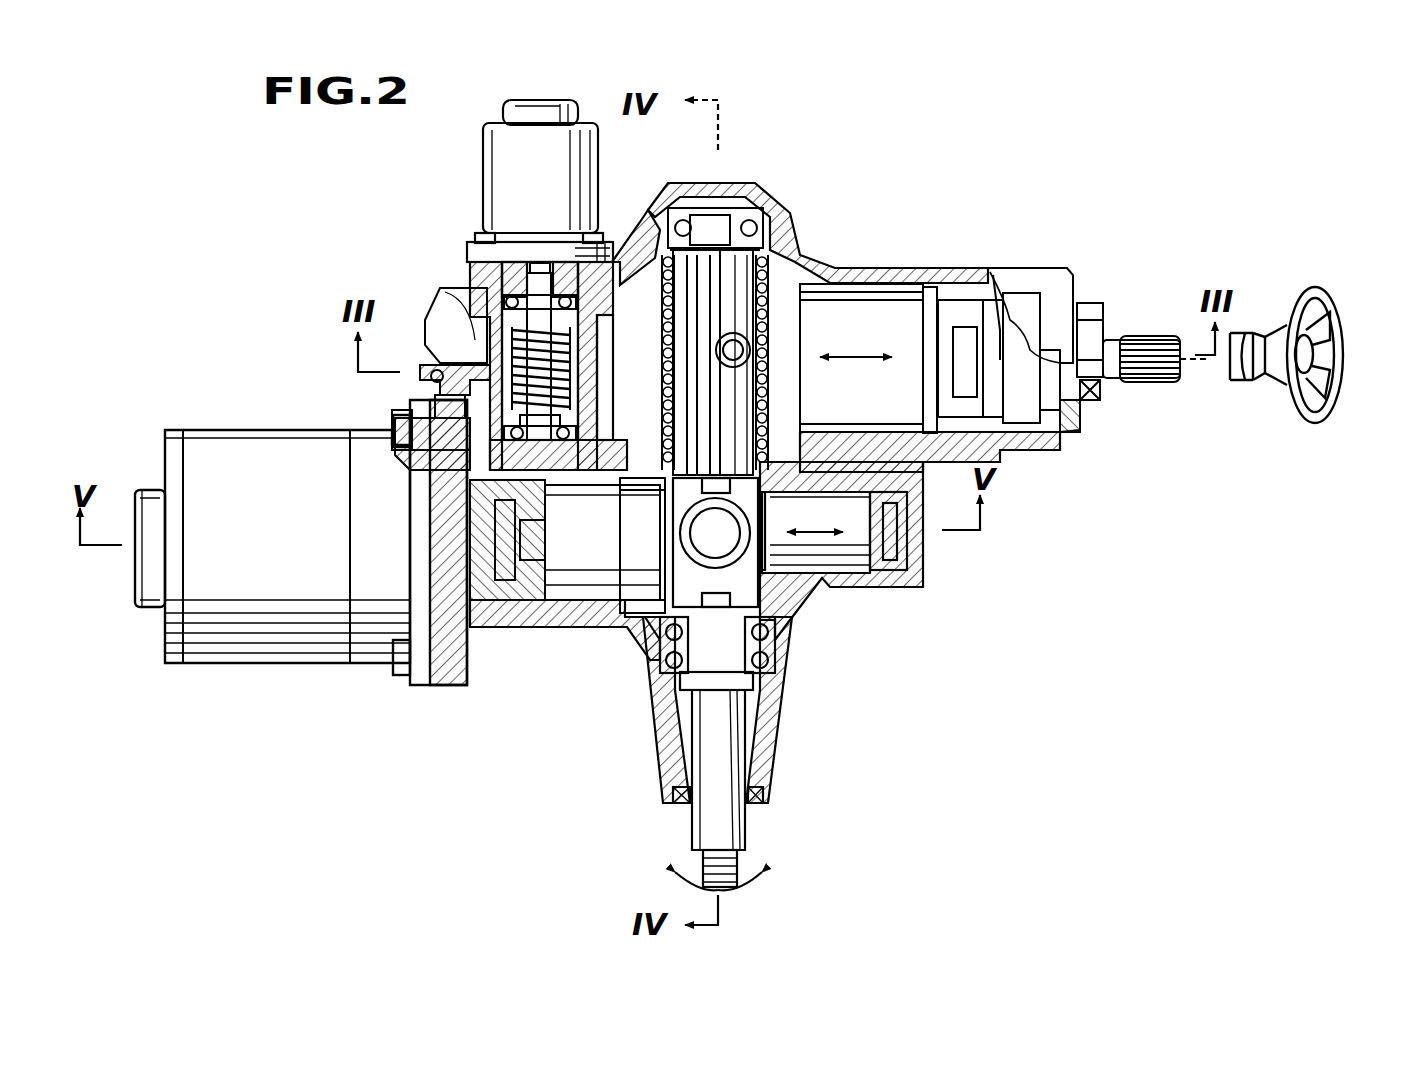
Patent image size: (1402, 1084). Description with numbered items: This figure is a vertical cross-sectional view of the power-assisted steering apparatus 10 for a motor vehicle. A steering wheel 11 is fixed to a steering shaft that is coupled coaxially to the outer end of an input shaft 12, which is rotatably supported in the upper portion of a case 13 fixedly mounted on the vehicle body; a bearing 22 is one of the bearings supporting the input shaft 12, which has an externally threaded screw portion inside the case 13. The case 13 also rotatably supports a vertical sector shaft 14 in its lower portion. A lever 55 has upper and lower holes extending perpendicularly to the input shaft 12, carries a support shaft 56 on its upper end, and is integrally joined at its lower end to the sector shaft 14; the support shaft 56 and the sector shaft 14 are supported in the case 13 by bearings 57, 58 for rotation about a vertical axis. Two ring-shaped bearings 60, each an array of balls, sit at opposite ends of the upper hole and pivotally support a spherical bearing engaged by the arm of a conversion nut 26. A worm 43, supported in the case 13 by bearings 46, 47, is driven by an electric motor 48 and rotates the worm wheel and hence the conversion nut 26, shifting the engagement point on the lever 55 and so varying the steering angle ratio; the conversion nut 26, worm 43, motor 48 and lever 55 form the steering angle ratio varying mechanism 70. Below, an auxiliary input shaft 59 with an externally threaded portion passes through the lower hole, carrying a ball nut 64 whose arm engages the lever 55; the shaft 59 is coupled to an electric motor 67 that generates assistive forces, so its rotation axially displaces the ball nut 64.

The steering apparatus 10 is at (1062, 240).
The steering wheel 11 is at (1310, 300).
The input shaft 12 is at (1148, 370).
The case 13 is at (955, 275).
The sector shaft 14 is at (747, 830).
The bearing 22 is at (432, 375).
The conversion nut 26 is at (878, 300).
The worm 43 is at (480, 330).
The bearing 46 is at (472, 240).
The bearing 47 is at (560, 462).
The electric motor 48 is at (495, 168).
The lever 55 is at (660, 640).
The support shaft 56 is at (705, 228).
The bearing 57 is at (768, 212).
The bearing 58 is at (778, 630).
The auxiliary input shaft 59 is at (530, 585).
The ring-shaped bearings 60 is at (665, 210).
The ball nut 64 is at (575, 585).
The electric motor 67 is at (250, 440).
The steering angle ratio varying mechanism 70 is at (925, 600).